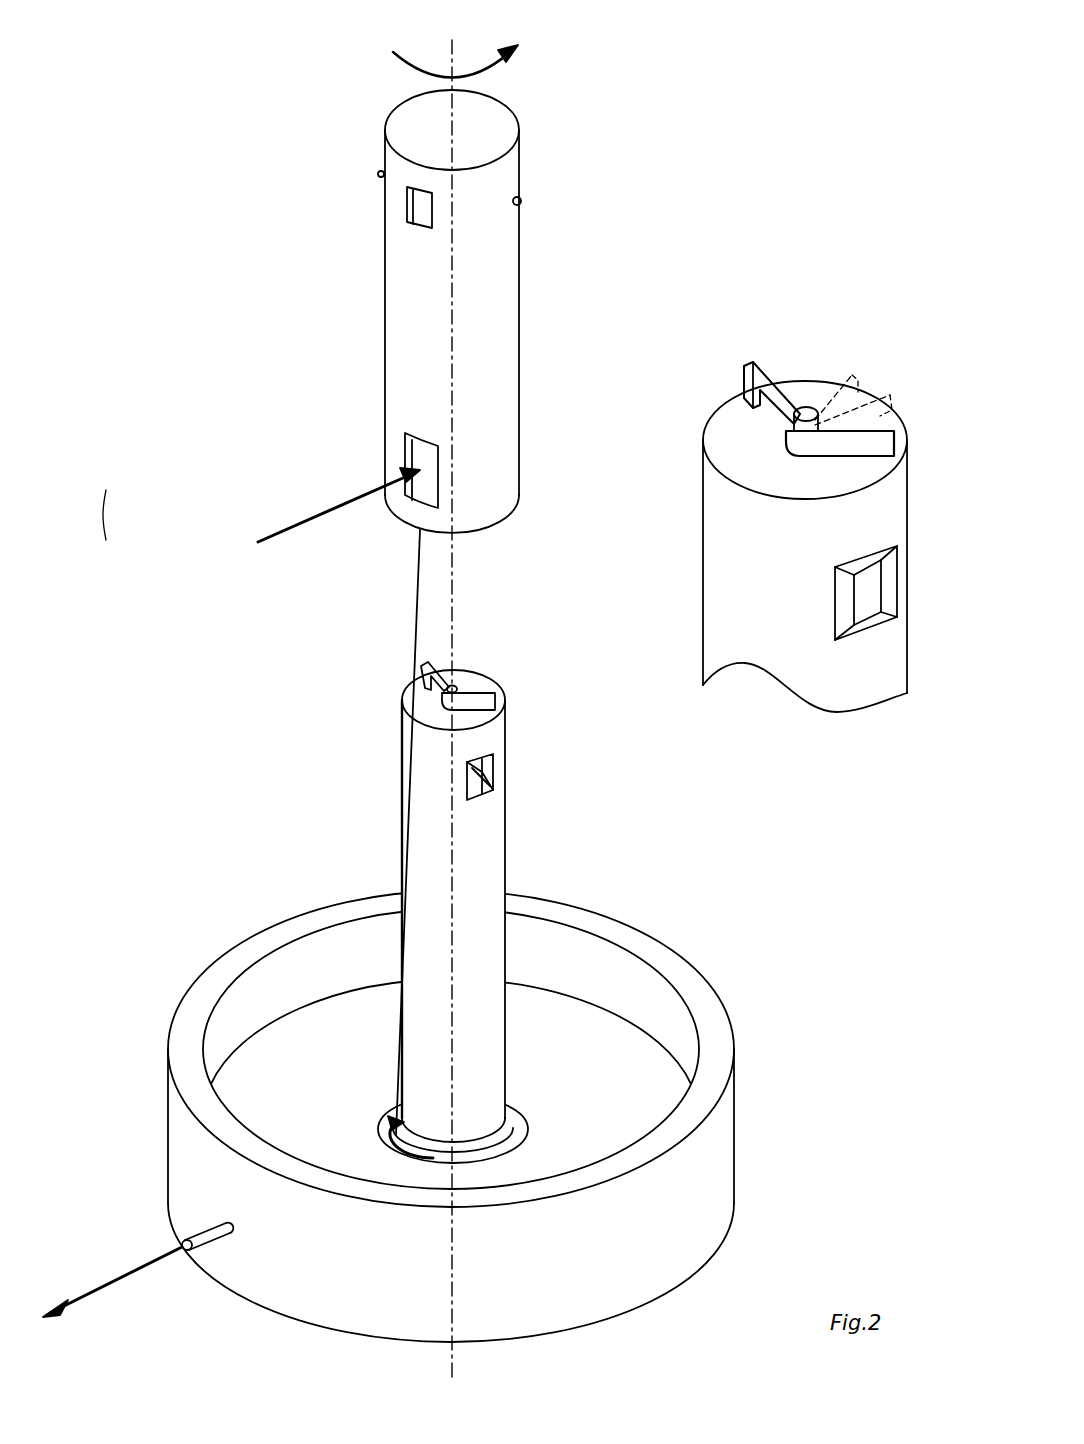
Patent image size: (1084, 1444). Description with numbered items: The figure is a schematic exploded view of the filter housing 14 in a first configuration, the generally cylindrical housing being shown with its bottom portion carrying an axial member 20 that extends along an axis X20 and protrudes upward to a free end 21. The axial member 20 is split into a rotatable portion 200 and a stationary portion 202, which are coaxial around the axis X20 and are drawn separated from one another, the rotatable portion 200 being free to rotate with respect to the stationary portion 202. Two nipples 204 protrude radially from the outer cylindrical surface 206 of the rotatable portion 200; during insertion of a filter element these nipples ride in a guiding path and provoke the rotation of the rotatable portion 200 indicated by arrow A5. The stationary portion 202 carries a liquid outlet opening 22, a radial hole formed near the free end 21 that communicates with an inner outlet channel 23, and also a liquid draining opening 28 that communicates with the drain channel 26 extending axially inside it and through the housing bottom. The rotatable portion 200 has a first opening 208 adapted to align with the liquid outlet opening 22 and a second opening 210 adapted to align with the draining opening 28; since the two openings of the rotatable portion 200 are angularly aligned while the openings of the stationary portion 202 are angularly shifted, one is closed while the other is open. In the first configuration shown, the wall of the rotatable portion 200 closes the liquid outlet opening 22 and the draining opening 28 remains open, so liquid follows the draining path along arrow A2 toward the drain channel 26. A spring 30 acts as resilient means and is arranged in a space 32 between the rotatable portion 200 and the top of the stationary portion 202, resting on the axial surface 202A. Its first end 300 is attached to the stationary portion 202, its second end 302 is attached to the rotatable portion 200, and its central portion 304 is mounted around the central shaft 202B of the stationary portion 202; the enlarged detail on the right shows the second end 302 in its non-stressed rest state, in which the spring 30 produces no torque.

The filter housing 14 is at (746, 975).
The axial member 20 is at (91, 515).
The rotatable portion 200 is at (420, 345).
The stationary portion 202 is at (425, 902).
The axial surface 202A is at (470, 676).
The central shaft 202B is at (810, 410).
The nipples 204 is at (376, 174).
The outer cylindrical surface 206 is at (470, 284).
The first opening 208 is at (408, 212).
The second opening 210 is at (400, 512).
The free end 21 is at (480, 128).
The liquid outlet opening 22 is at (497, 768).
The inner outlet channel 23 is at (488, 786).
The drain channel 26 is at (215, 1235).
The liquid draining opening 28 is at (414, 1138).
The spring 30 is at (498, 702).
The space 32 is at (440, 716).
The first end 300 is at (430, 683).
The second end 302 is at (470, 690).
The central portion 304 is at (792, 438).
The axis X20 is at (454, 696).
The arrow A5 is at (471, 57).
The arrow A2 is at (238, 892).